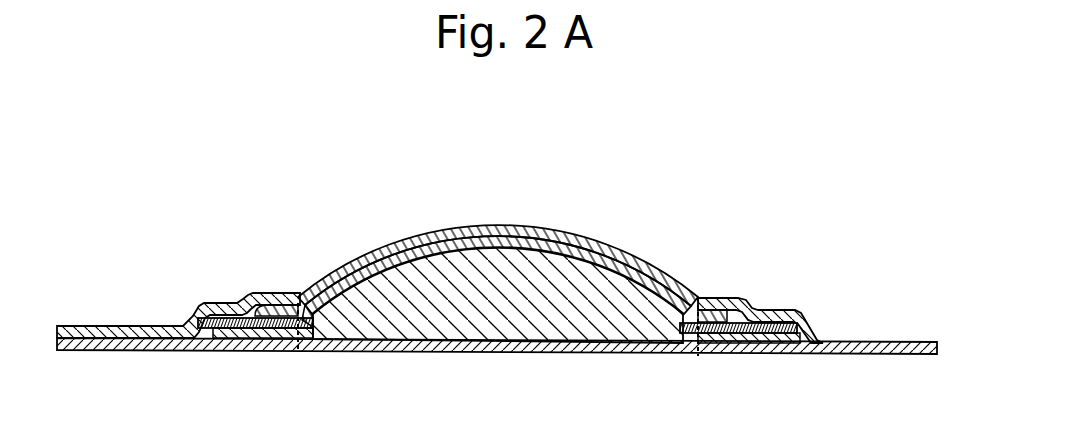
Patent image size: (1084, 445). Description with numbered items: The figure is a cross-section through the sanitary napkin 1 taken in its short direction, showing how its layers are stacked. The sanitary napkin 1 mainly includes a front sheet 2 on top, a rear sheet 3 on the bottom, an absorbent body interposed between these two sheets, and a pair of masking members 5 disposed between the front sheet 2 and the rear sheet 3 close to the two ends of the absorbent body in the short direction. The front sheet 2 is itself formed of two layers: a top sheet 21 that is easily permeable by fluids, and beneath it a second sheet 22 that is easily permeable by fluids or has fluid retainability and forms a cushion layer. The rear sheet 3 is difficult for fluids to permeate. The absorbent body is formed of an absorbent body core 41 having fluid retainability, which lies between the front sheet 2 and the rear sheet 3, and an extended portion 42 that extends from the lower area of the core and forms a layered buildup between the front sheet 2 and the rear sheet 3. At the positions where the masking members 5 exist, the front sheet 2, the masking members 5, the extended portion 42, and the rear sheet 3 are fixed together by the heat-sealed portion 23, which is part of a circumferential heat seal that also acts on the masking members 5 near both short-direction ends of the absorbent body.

The sanitary napkin 1 is at (497, 272).
The front sheet 2 is at (502, 250).
The top sheet 21 is at (569, 233).
The second sheet 22 is at (591, 250).
The heat-sealed portion 23 is at (298, 297).
The rear sheet 3 is at (621, 352).
The absorbent body core 41 is at (477, 327).
The extended portion 42 is at (258, 347).
The masking member 5 is at (192, 347).